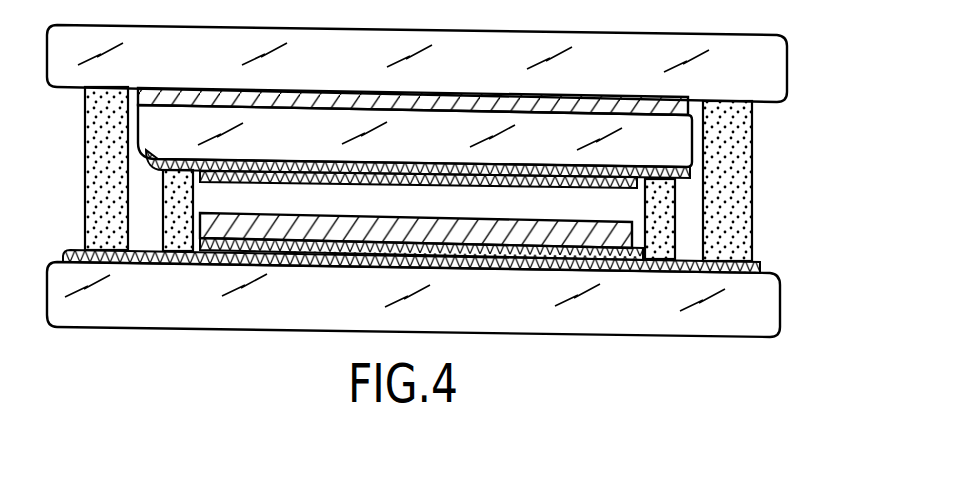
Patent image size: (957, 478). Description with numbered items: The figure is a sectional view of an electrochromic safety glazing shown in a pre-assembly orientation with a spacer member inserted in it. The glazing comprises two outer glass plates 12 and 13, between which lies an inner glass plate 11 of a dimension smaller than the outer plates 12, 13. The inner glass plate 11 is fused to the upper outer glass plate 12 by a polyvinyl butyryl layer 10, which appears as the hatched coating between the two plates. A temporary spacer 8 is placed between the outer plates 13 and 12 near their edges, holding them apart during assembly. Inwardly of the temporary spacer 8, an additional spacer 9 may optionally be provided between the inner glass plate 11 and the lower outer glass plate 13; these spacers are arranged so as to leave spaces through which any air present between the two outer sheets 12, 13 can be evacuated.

The temporary spacer 8 is at (720, 167).
The additional spacer 9 is at (660, 212).
The polyvinyl butyryl layer 10 is at (474, 103).
The inner glass plate 11 is at (449, 152).
The outer glass plate 12 is at (750, 63).
The outer glass plate 13 is at (762, 298).